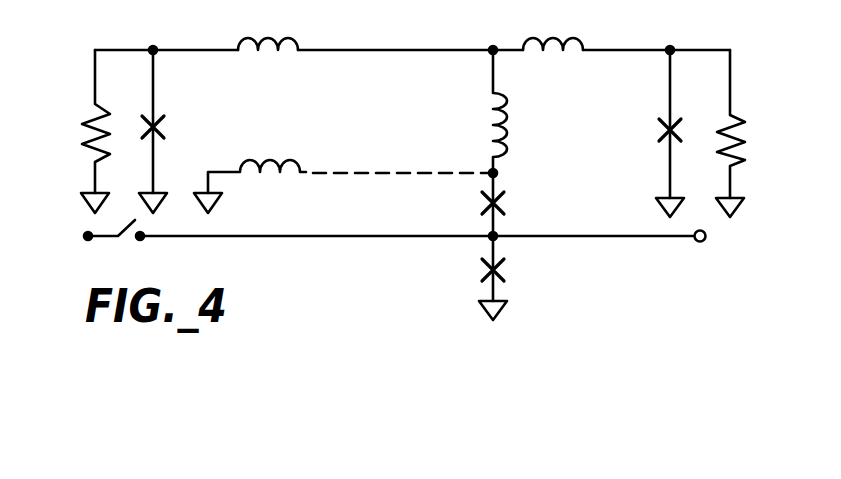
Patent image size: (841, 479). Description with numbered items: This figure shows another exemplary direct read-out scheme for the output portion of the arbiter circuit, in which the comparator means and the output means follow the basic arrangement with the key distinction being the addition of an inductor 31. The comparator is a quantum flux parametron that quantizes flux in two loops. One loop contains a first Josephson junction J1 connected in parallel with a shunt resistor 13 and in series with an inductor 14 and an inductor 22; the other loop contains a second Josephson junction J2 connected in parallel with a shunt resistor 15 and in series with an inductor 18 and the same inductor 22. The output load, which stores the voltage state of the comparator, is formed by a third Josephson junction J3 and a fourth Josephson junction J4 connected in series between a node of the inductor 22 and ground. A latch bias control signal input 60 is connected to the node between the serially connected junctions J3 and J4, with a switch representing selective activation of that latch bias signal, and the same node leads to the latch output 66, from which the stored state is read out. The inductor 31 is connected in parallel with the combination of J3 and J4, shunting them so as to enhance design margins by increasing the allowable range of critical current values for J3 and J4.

The shunt resistor 13 is at (87, 137).
The inductor 14 is at (259, 41).
The shunt resistor 15 is at (730, 117).
The inductor 18 is at (579, 41).
The inductor 22 is at (500, 97).
The inductor 31 is at (244, 164).
The latch bias control signal input 60 is at (205, 236).
The latch output 66 is at (572, 236).
The first Josephson junction J1 is at (164, 131).
The second Josephson junction J2 is at (679, 133).
The third Josephson junction J3 is at (505, 204).
The fourth Josephson junction J4 is at (504, 278).